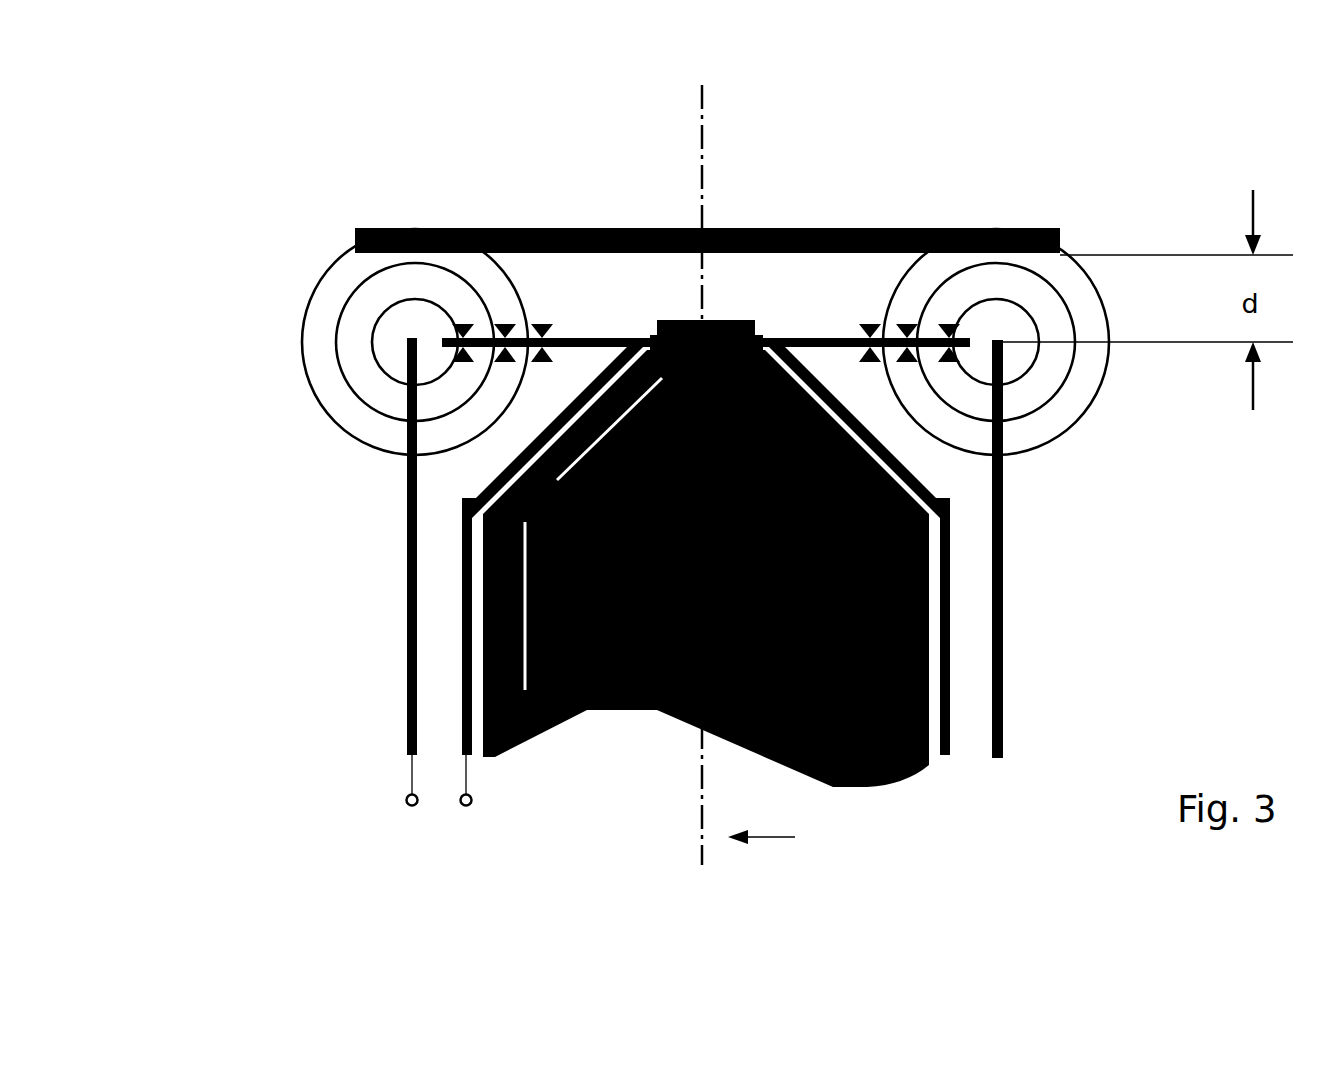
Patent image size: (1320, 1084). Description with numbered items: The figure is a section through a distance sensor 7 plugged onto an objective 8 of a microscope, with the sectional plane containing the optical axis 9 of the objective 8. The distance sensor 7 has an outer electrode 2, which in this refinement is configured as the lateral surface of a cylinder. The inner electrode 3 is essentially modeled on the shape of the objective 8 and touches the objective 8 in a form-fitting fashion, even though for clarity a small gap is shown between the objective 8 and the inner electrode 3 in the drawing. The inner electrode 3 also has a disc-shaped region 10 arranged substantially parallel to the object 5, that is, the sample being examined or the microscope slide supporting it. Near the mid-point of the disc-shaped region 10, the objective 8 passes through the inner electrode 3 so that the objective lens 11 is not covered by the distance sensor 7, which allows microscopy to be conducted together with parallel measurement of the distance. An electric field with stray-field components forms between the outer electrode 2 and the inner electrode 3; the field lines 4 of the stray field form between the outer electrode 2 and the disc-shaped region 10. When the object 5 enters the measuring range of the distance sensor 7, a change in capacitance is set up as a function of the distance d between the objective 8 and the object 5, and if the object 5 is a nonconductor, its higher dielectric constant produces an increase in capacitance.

The outer electrode 2 is at (407, 522).
The inner electrode 3 is at (462, 625).
The field lines 4 is at (333, 352).
The object 5 is at (391, 228).
The distance sensor 7 is at (273, 690).
The objective 8 is at (612, 712).
The optical axis 9 is at (785, 838).
The disc-shaped region 10 is at (601, 338).
The objective lens 11 is at (737, 318).